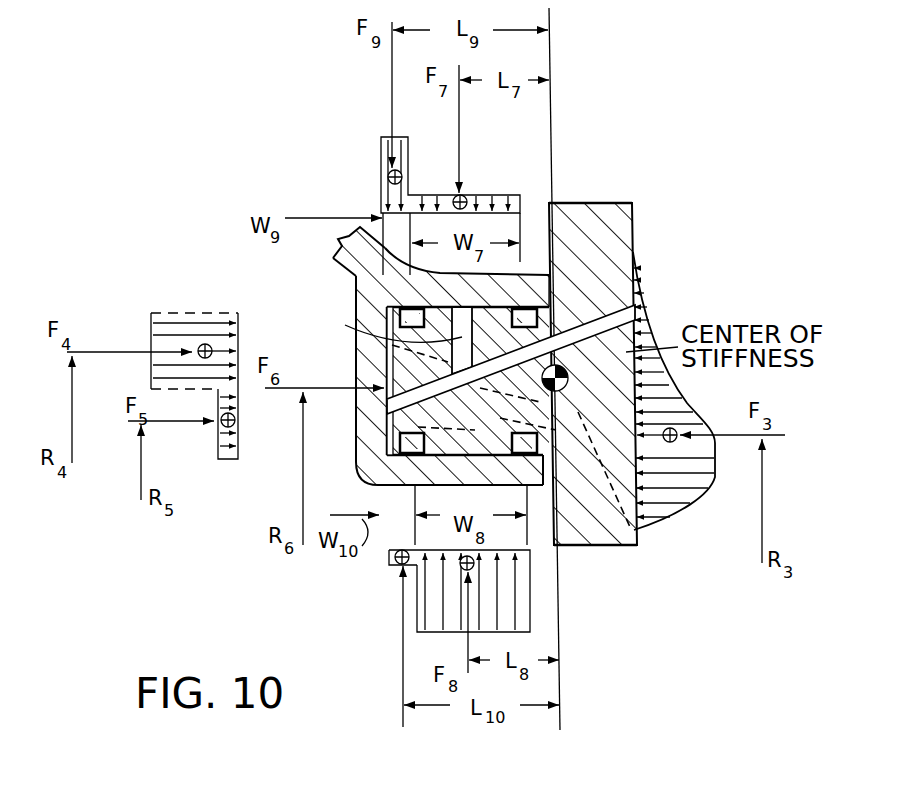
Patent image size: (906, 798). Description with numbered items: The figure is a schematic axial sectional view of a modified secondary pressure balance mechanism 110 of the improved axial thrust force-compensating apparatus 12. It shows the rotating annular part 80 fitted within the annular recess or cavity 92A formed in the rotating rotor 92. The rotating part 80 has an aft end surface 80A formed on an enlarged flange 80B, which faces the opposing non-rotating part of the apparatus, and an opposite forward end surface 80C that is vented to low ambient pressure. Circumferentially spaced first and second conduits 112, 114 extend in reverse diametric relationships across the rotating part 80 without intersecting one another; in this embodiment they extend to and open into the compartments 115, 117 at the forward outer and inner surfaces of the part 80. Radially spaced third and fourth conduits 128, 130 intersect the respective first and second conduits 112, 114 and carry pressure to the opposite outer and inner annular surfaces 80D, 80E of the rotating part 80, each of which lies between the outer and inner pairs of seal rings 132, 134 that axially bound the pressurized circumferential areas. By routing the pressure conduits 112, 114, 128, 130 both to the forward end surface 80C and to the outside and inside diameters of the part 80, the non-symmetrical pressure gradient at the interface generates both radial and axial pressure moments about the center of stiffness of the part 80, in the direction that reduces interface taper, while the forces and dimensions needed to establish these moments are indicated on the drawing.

The axial thrust force-compensating apparatus 12 is at (663, 198).
The rotating annular part 80 is at (593, 203).
The aft end surface 80A is at (634, 238).
The enlarged flange 80B is at (585, 547).
The forward end surface 80C is at (388, 440).
The outer annular surface 80D is at (487, 318).
The inner annular surface 80E is at (505, 460).
The rotating rotor 92 is at (360, 263).
The annular recess or cavity 92A is at (372, 470).
The secondary pressure balance mechanism 110 is at (258, 296).
The first conduits 112 is at (613, 320).
The second conduits 114 is at (640, 533).
The compartment 115 is at (398, 303).
The compartment 117 is at (390, 550).
The third conduits 128 is at (383, 327).
The fourth conduits 130 is at (389, 418).
The outer pair of seal rings 132 is at (408, 313).
The inner pair of seal rings 134 is at (405, 452).